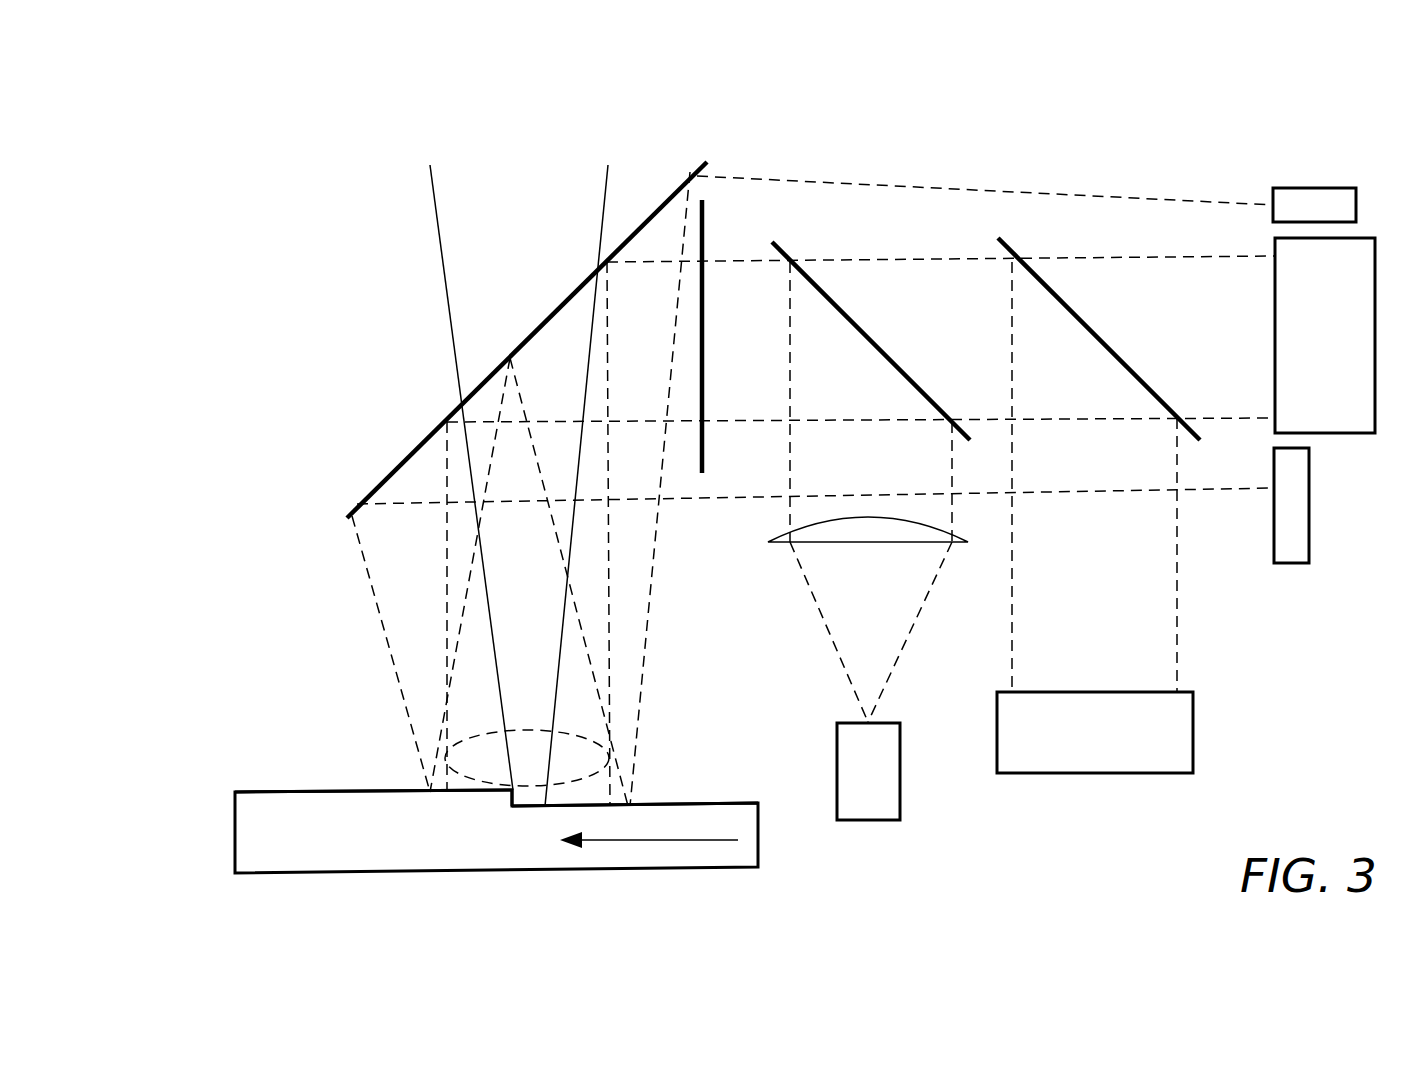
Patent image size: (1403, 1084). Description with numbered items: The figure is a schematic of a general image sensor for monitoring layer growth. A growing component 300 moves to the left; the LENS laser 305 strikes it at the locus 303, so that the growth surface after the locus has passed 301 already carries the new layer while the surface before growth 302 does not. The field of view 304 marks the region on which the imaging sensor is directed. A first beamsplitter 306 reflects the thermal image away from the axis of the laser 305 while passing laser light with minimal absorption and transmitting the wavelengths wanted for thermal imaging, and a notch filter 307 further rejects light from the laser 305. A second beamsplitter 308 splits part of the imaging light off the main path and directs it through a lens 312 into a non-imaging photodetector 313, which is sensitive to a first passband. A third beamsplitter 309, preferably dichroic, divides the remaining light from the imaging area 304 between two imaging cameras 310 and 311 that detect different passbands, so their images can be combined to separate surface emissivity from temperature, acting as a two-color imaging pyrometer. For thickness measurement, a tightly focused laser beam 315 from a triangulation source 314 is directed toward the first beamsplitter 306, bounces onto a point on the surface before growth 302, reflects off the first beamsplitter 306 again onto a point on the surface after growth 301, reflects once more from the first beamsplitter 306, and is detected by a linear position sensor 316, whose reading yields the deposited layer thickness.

The growing component 300 is at (400, 858).
The growth surface after locus has passed 301 is at (273, 790).
The growth surface before growth 302 is at (645, 805).
The locus 303 is at (522, 810).
The field of view 304 is at (478, 738).
The LENS laser 305 is at (428, 202).
The first beamsplitter 306 is at (398, 467).
The notch filter 307 is at (704, 247).
The second beamsplitter 308 is at (858, 332).
The third beamsplitter 309 is at (1100, 338).
The imaging camera 310 is at (1342, 343).
The imaging camera 311 is at (1105, 740).
The lens 312 is at (780, 540).
The non-imaging photodetector 313 is at (887, 780).
The triangulation source 314 is at (1287, 202).
The laser beam 315 is at (838, 183).
The linear position sensor 316 is at (1289, 485).